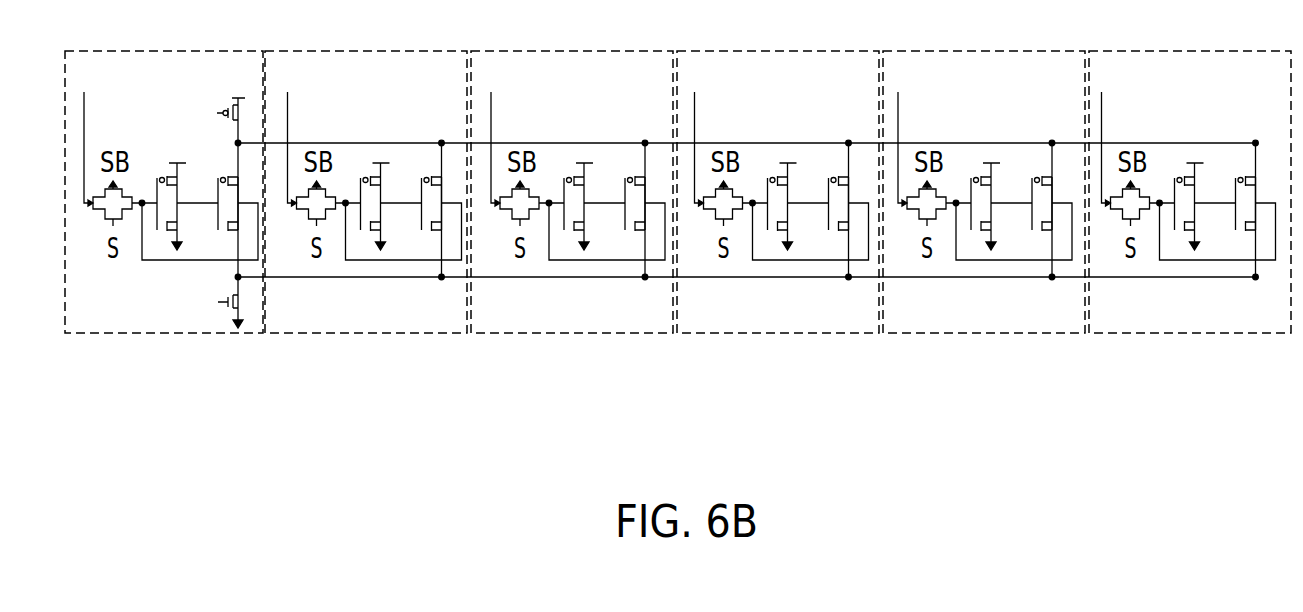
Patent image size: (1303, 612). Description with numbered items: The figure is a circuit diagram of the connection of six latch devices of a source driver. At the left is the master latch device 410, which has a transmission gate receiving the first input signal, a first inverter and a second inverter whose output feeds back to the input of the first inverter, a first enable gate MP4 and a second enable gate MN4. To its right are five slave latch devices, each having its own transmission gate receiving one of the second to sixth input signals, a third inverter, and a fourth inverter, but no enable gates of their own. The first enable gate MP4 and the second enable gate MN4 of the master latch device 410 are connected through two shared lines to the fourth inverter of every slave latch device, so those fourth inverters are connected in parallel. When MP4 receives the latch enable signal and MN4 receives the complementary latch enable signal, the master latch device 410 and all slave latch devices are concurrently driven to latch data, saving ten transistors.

The master latch device 410 is at (164, 257).
The first enable gate MP4 is at (228, 101).
The second enable gate MN4 is at (229, 318).